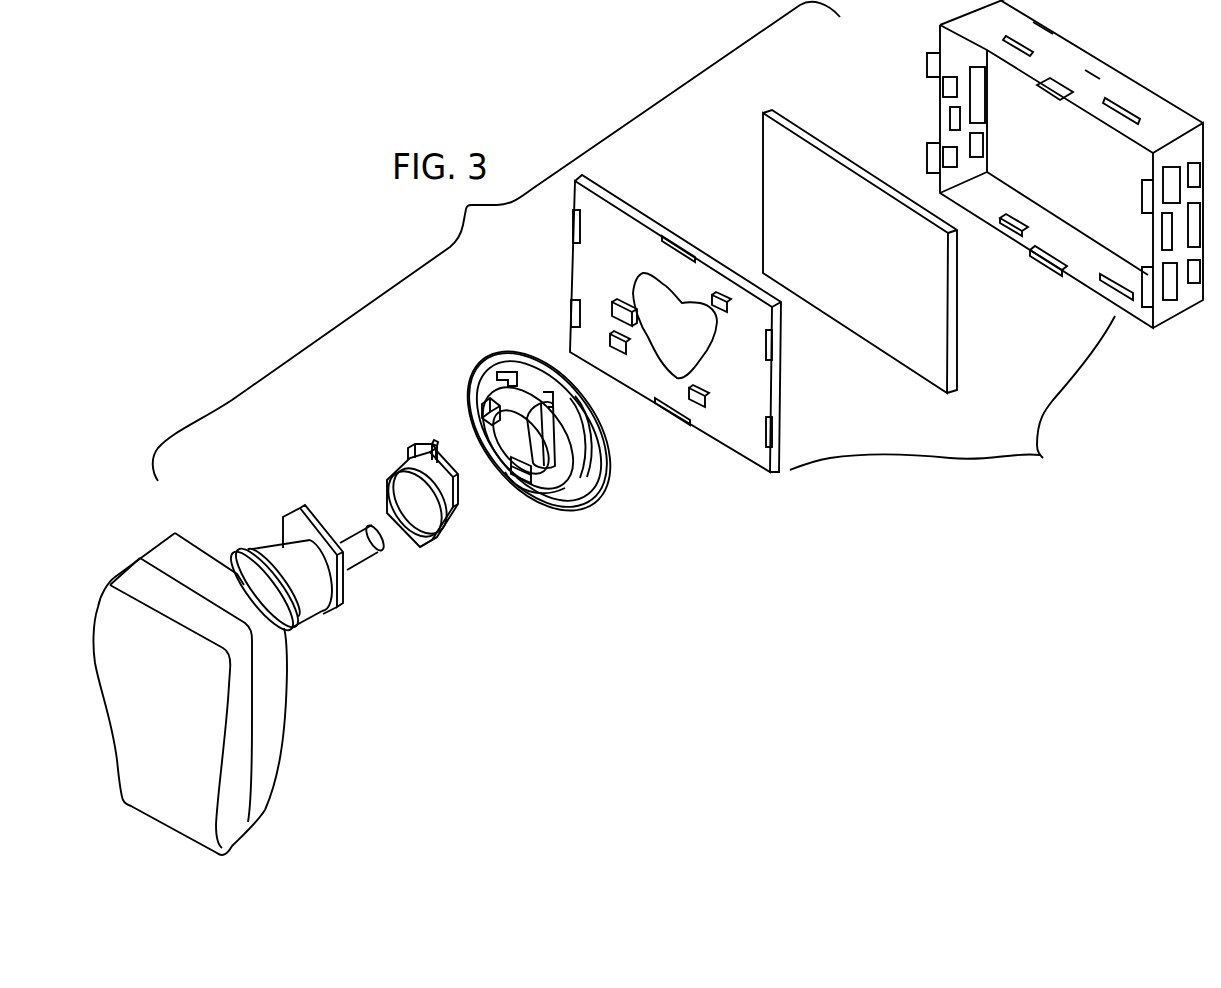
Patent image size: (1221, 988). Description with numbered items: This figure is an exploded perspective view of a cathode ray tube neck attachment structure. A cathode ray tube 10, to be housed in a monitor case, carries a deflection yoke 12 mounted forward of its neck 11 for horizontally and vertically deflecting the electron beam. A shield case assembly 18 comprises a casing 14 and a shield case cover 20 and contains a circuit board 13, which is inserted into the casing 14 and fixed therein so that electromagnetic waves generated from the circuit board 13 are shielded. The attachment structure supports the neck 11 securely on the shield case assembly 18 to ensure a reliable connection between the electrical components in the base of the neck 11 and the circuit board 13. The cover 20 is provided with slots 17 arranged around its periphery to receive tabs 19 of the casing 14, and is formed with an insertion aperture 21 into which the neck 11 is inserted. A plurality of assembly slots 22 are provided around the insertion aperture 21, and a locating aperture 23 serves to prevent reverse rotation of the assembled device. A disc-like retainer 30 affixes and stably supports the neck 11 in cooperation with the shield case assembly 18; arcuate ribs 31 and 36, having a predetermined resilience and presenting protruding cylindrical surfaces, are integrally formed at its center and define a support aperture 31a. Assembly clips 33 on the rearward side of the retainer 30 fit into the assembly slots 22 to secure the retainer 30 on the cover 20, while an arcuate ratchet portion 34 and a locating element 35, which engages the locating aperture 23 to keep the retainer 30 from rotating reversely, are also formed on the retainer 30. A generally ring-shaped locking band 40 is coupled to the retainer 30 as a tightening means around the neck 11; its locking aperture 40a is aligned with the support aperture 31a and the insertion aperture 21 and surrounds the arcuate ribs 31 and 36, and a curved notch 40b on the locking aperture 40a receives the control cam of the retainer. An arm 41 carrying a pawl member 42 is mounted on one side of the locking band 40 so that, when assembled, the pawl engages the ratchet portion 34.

The cathode ray tube 10 is at (146, 532).
The neck 11 is at (358, 553).
The deflection yoke 12 is at (307, 585).
The circuit board 13 is at (933, 367).
The casing 14 is at (1035, 172).
The slots 17 is at (572, 223).
The shield case assembly 18 is at (634, 241).
The tabs 19 is at (927, 160).
The shield case cover 20 is at (647, 322).
The insertion aperture 21 is at (683, 322).
The assembly slots 22 is at (707, 390).
The locating aperture 23 is at (611, 304).
The retainer 30 is at (535, 416).
The arcuate rib 31 is at (520, 448).
The support aperture 31a is at (523, 452).
The assembly clips 33 is at (530, 497).
The arcuate ratchet portion 34 is at (479, 396).
The locating element 35 is at (510, 372).
The arcuate rib 36 is at (550, 455).
The locking band 40 is at (408, 494).
The locking aperture 40a is at (425, 515).
The curved notch 40b is at (438, 479).
The arm 41 is at (410, 465).
The pawl member 42 is at (433, 453).